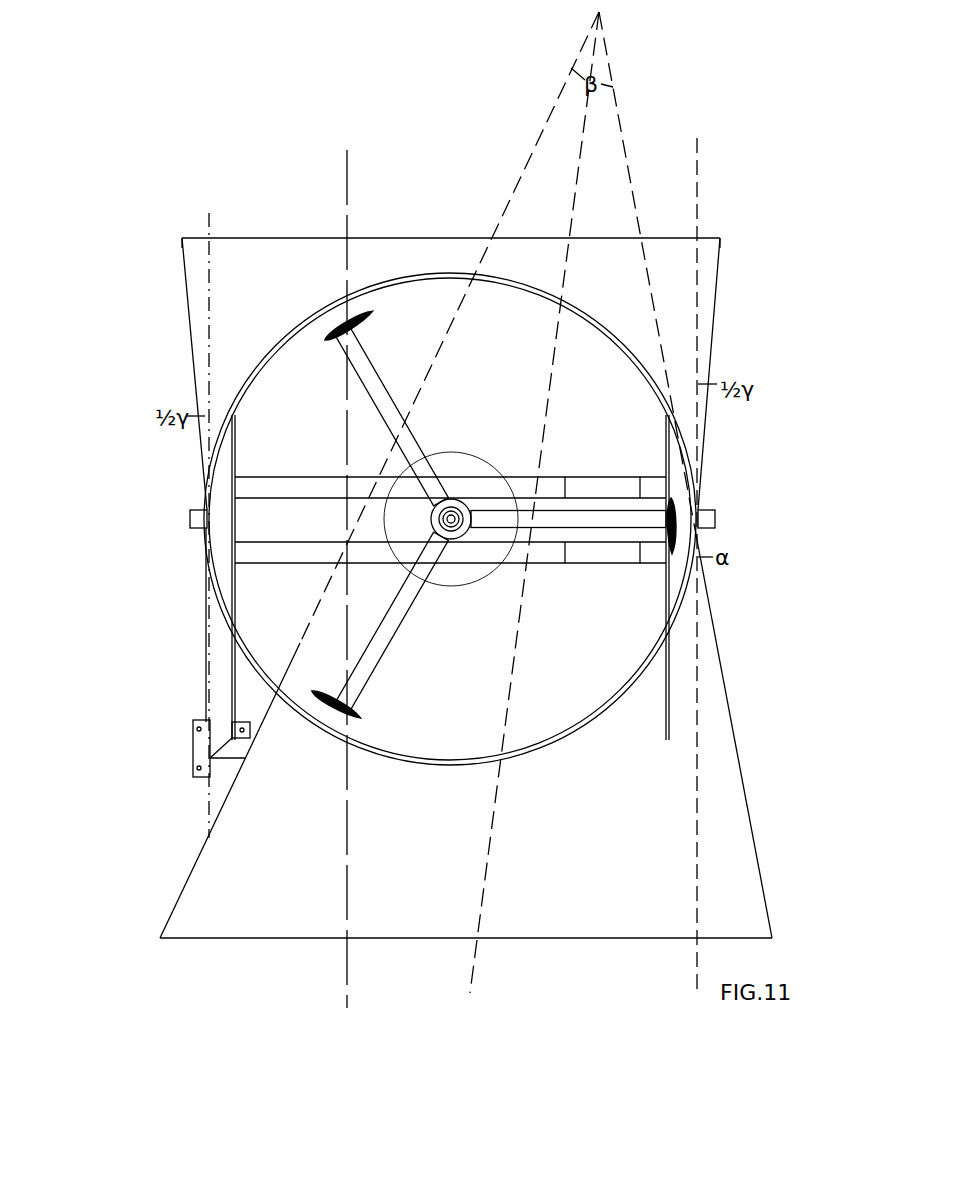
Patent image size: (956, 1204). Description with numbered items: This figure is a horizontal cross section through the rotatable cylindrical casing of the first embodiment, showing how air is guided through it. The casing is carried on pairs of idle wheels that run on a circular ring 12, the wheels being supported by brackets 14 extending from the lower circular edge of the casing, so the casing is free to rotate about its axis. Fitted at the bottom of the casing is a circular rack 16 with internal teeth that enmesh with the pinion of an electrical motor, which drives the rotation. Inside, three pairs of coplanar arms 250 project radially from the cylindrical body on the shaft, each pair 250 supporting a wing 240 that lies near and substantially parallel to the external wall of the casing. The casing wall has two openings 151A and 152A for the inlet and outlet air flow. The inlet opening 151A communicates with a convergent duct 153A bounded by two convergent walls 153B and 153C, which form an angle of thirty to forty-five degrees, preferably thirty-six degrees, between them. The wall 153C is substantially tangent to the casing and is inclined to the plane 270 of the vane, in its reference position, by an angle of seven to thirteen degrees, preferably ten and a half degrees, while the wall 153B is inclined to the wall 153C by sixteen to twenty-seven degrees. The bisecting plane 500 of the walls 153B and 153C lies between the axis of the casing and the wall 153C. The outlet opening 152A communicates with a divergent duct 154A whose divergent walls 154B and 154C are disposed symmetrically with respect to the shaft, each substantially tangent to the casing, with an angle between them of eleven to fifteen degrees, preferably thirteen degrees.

The circular ring 12 is at (699, 575).
The brackets 14 is at (190, 516).
The circular rack 16 is at (678, 458).
The wing 240 is at (340, 325).
The pairs of coplanar arms 250 is at (380, 392).
The plane of the vane 270 is at (347, 198).
The opening 151A is at (606, 724).
The opening 152A is at (578, 303).
The convergent duct 153A is at (557, 875).
The convergent wall 153B is at (190, 868).
The convergent wall 153C is at (765, 892).
The divergent duct 154A is at (673, 298).
The divergent wall 154B is at (195, 372).
The divergent wall 154C is at (706, 366).
The bisecting plane 500 is at (470, 982).